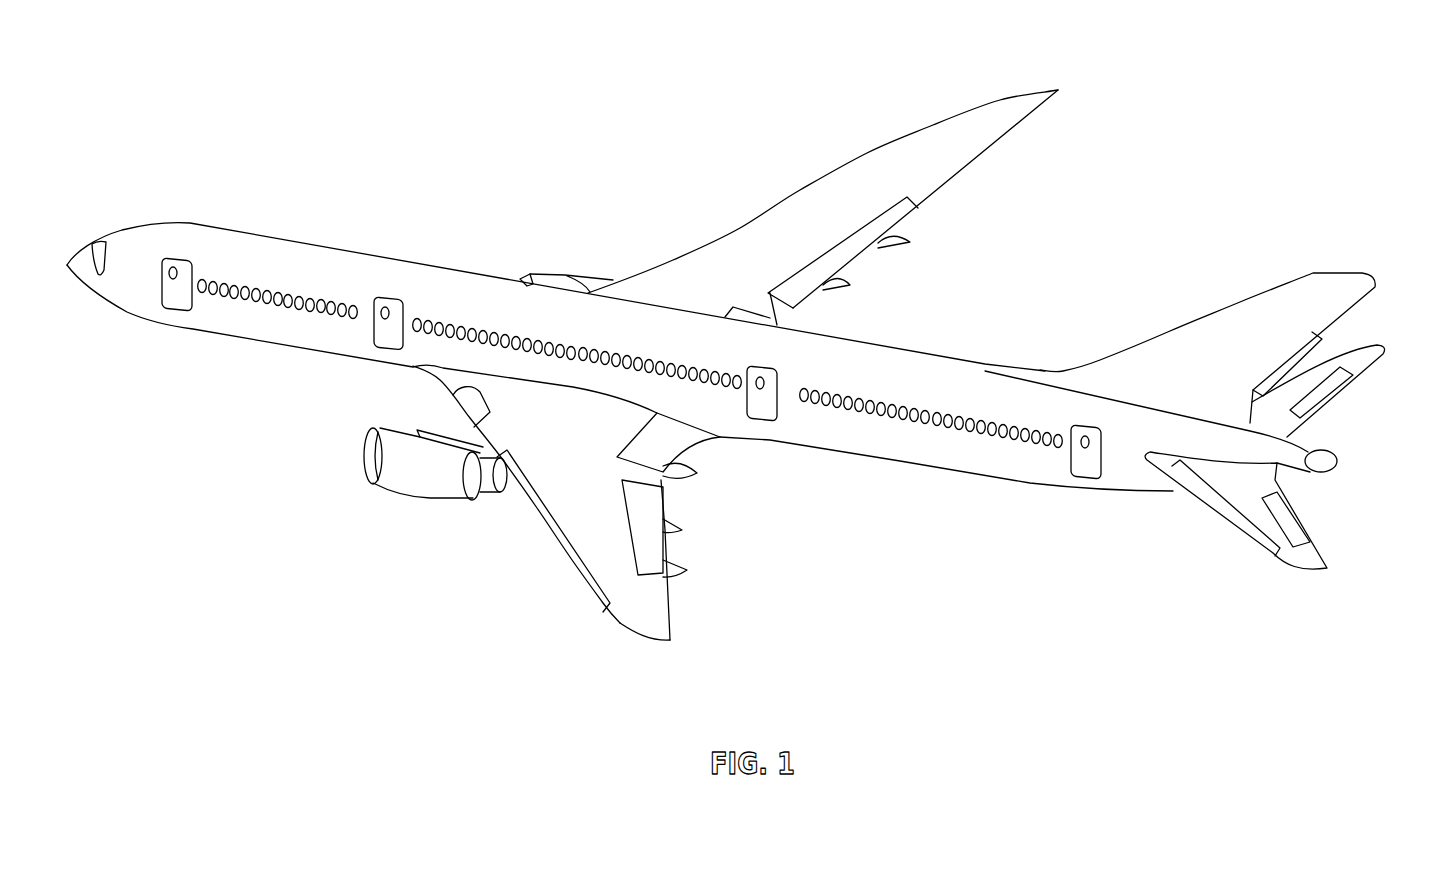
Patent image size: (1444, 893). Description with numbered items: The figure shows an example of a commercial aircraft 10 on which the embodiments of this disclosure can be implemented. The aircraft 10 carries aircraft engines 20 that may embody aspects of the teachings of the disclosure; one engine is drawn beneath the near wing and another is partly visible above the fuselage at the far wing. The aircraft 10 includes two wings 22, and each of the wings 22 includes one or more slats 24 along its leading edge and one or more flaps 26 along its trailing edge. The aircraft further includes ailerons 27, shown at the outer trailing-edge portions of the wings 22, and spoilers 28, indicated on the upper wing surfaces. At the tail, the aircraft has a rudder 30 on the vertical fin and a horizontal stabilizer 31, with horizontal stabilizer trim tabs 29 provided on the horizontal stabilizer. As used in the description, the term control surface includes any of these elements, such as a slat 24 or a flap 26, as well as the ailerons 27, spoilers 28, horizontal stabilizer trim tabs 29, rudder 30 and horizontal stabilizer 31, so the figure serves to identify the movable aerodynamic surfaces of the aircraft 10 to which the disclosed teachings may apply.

The aircraft 10 is at (1178, 132).
The aircraft engines 20 is at (553, 282).
The wings 22 is at (842, 192).
The slats 24 is at (568, 563).
The flaps 26 is at (860, 250).
The ailerons 27 is at (1003, 155).
The spoilers 28 is at (957, 134).
The horizontal stabilizer trim tabs 29 is at (1222, 512).
The rudder 30 is at (1305, 341).
The horizontal stabilizer 31 is at (1299, 525).